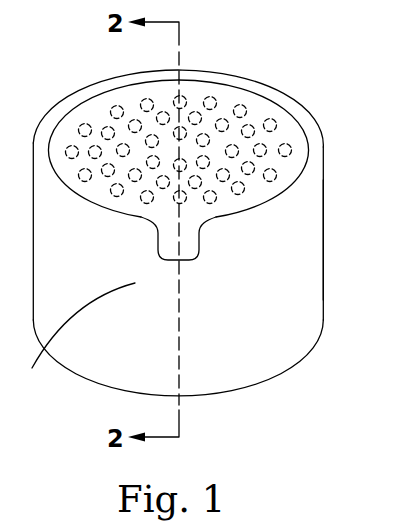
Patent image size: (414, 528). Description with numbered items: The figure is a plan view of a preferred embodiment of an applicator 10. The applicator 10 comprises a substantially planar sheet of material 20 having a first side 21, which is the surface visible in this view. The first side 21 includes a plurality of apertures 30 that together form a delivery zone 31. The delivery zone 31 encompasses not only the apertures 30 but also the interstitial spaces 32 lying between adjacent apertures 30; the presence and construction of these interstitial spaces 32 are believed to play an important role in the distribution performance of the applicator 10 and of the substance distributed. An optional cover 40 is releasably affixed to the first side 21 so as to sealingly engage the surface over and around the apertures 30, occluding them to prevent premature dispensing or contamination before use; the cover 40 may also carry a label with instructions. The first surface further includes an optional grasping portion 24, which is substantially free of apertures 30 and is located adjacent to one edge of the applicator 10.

The applicator 10 is at (300, 331).
The sheet of material 20 is at (103, 365).
The first side 21 is at (307, 243).
The grasping portion 24 is at (76, 338).
The aperture 30 is at (242, 105).
The delivery zone 31 is at (132, 100).
The interstitial spaces 32 is at (274, 163).
The cover 40 is at (188, 216).